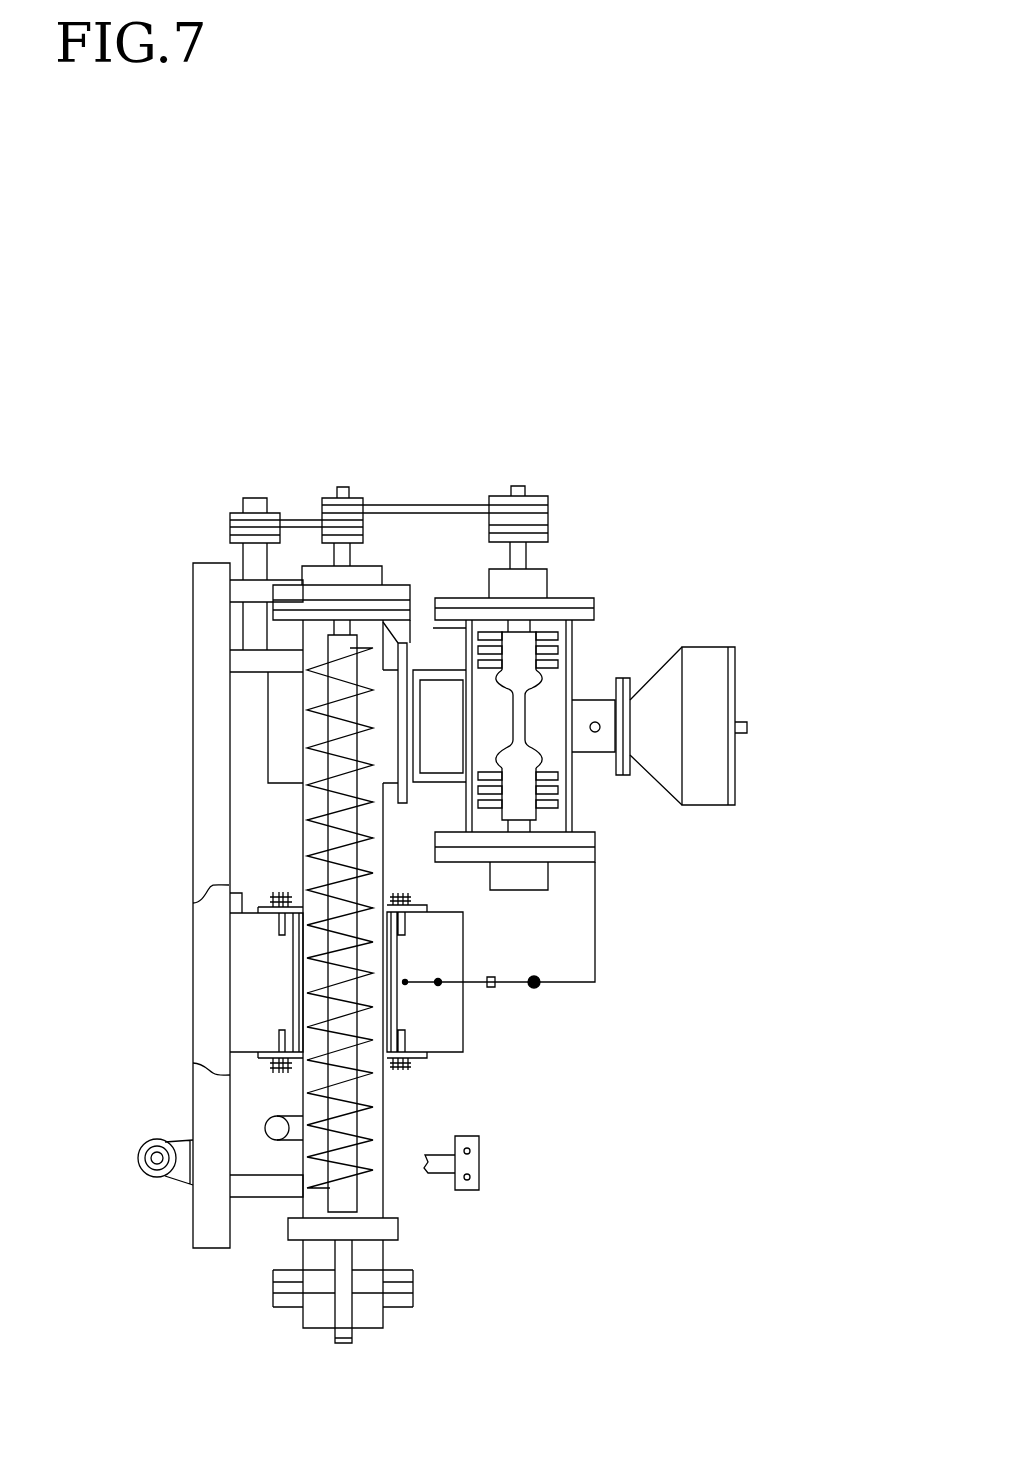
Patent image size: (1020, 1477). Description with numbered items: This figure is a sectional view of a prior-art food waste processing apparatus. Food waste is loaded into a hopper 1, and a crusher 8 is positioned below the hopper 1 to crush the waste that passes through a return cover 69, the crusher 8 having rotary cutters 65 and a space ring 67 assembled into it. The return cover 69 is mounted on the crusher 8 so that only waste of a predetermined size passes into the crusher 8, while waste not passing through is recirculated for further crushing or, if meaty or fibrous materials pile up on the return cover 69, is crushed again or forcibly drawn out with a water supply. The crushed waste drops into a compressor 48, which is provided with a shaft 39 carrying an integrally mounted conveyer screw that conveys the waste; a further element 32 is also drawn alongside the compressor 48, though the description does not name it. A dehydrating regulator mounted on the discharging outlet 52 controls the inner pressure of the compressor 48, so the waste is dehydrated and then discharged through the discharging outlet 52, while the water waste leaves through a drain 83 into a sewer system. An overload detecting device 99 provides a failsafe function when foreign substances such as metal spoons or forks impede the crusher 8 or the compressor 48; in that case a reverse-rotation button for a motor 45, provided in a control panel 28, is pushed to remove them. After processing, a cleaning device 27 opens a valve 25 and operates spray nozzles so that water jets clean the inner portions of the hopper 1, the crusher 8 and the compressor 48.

The hopper 1 is at (718, 675).
The crusher 8 is at (572, 682).
The valve 25 is at (538, 987).
The cleaning device 27 is at (453, 1025).
The control panel 28 is at (469, 1162).
The guide rod 32 is at (402, 803).
The shaft 39 is at (340, 497).
The motor 45 is at (250, 633).
The compressor 48 is at (300, 742).
The discharging outlet 52 is at (278, 1128).
The rotary cutters 65 is at (558, 603).
The space ring 67 is at (543, 782).
The return cover 69 is at (432, 753).
The drain 83 is at (232, 899).
The overload detecting device 99 is at (485, 1157).